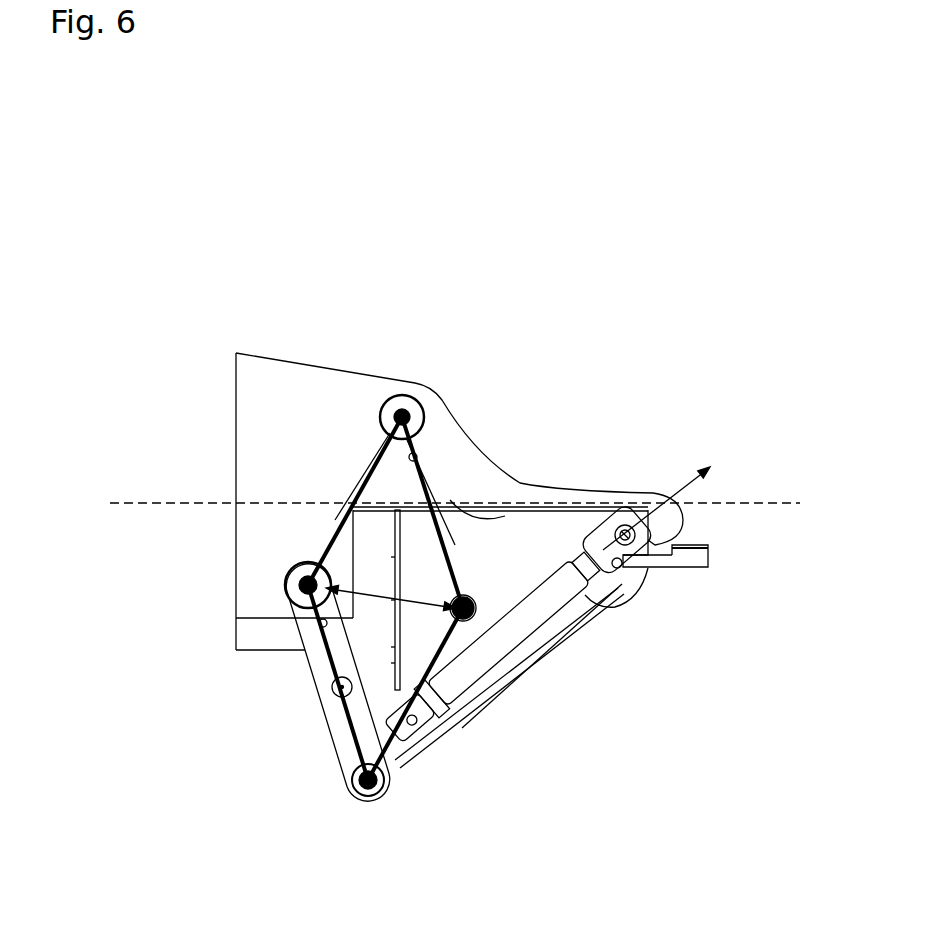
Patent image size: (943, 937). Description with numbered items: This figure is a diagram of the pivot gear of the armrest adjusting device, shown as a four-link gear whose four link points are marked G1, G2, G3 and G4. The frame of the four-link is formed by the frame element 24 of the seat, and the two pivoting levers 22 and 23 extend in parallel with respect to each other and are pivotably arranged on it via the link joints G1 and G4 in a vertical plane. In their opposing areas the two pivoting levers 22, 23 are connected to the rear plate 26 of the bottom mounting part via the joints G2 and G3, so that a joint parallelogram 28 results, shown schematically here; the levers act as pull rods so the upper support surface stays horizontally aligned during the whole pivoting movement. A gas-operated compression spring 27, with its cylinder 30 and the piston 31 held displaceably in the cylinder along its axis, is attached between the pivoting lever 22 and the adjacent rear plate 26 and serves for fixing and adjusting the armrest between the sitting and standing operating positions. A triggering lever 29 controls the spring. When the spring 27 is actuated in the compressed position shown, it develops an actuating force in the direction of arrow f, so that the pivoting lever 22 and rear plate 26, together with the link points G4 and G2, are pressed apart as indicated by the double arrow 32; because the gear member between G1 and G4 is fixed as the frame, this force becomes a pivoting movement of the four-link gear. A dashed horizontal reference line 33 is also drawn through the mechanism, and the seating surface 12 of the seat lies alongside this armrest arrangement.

The seating surface 12 is at (668, 520).
The pivoting lever 22 is at (338, 728).
The pivoting lever 23 is at (430, 500).
The frame element 24 is at (273, 410).
The rear plate 26 is at (480, 683).
The gas-operated compression spring 27 is at (517, 617).
The joint parallelogram 28 is at (427, 475).
The triggering lever 29 is at (690, 553).
The cylinder 30 is at (460, 683).
The piston 31 is at (610, 580).
The double arrow 32 is at (375, 593).
The reference axis 33 is at (763, 502).
The link joint G1 is at (405, 410).
The link joint G2 is at (470, 600).
The link joint G3 is at (368, 780).
The link joint G4 is at (308, 585).
The arrow f is at (663, 496).